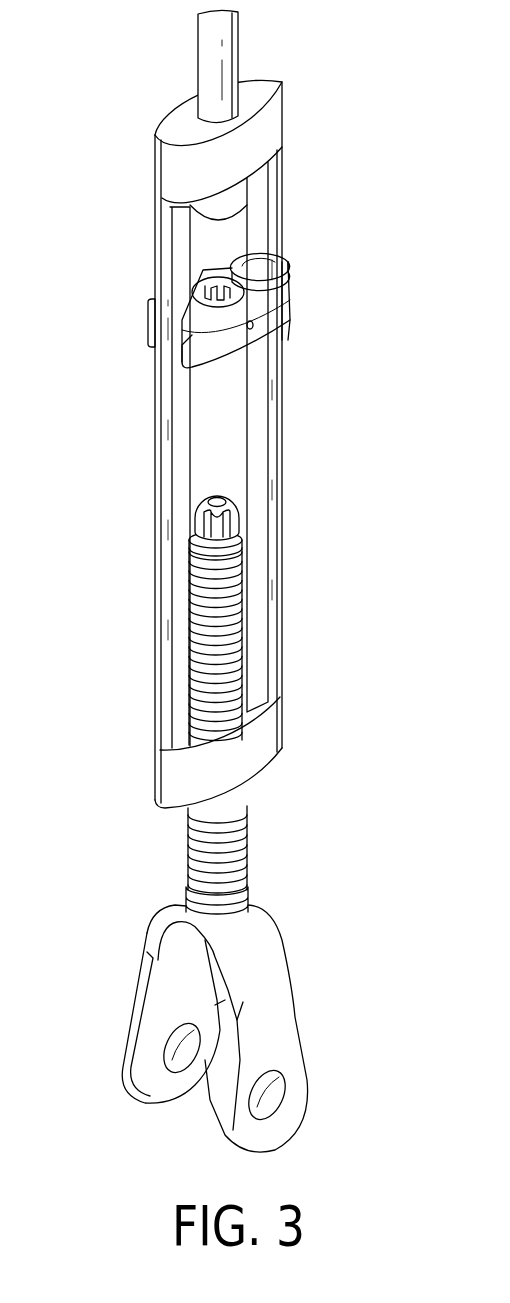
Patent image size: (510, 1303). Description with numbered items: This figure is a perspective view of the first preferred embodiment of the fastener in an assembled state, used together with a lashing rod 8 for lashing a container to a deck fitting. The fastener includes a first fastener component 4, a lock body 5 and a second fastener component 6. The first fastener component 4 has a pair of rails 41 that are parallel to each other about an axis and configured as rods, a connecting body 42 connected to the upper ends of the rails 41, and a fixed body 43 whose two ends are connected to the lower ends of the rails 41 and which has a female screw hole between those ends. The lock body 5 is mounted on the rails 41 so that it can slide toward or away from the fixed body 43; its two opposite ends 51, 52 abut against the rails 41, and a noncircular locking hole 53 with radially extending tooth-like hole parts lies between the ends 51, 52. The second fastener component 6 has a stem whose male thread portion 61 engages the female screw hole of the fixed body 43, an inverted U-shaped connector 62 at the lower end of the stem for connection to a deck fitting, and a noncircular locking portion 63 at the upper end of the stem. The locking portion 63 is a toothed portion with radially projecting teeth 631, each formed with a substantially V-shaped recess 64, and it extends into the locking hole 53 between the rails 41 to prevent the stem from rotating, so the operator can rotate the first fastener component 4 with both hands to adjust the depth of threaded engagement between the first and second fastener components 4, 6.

The first fastener component 4 is at (300, 422).
The rails 41 is at (267, 223).
The connecting body 42 is at (283, 123).
The fixed body 43 is at (265, 752).
The lock body 5 is at (300, 292).
The end of lock body 51 is at (205, 333).
The end of lock body 52 is at (283, 252).
The locking hole 53 is at (282, 356).
The second fastener component 6 is at (264, 852).
The male thread portion 61 is at (225, 640).
The inverted U-shaped connector 62 is at (295, 1012).
The locking portion 63 is at (222, 497).
The teeth 631 is at (197, 518).
The V-shaped recess 64 is at (243, 545).
The lashing rod 8 is at (252, 46).